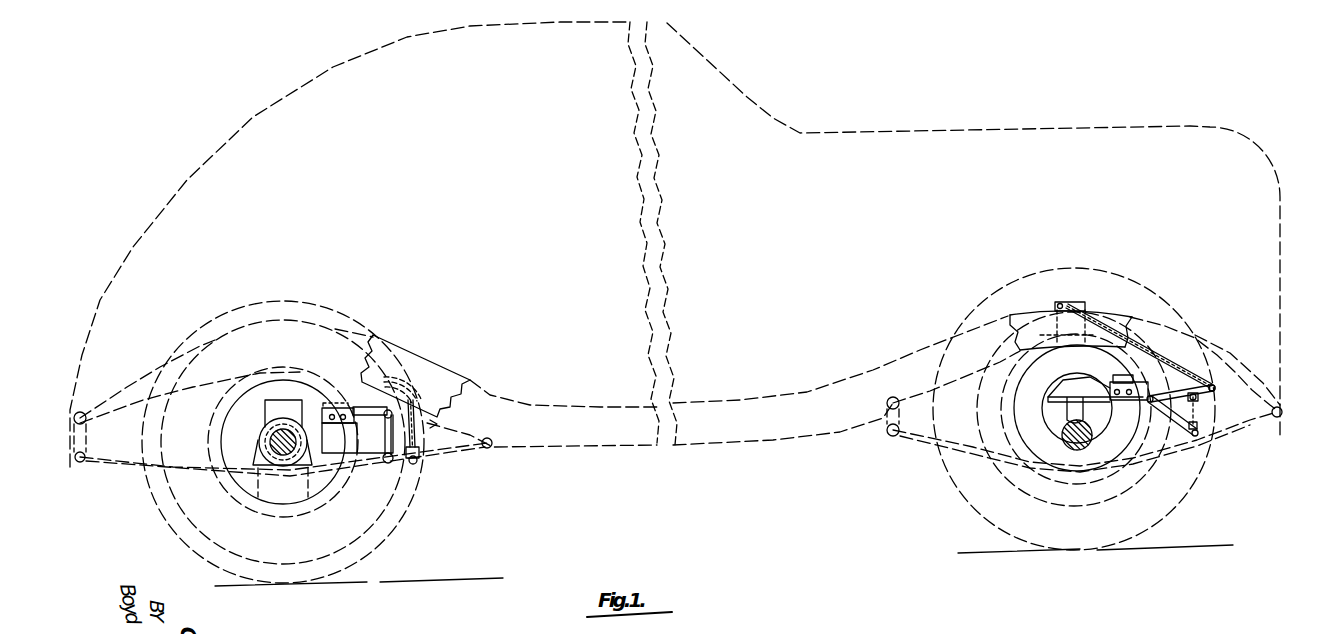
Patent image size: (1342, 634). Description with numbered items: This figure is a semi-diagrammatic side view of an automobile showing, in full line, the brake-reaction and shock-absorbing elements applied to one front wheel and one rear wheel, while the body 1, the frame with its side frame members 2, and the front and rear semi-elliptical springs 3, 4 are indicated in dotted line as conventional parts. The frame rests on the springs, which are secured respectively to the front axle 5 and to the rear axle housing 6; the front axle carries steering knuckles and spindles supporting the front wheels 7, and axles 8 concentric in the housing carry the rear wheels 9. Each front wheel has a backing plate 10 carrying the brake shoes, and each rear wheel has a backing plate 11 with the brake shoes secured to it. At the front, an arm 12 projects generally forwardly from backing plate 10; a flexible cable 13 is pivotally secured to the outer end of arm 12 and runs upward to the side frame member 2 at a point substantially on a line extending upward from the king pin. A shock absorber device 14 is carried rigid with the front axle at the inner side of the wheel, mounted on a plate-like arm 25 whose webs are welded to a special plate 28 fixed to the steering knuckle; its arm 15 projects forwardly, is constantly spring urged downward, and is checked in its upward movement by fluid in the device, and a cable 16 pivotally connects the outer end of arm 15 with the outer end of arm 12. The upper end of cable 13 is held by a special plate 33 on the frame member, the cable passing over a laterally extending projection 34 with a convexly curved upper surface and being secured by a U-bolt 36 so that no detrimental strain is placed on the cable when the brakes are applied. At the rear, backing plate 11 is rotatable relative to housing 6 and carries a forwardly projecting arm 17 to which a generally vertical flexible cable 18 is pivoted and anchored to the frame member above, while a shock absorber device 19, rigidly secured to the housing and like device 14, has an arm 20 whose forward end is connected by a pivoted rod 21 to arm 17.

The body 1 is at (855, 133).
The side frame members 2 is at (437, 365).
The front semi-elliptical spring 3 is at (980, 460).
The rear semi-elliptical spring 4 is at (432, 462).
The front axle 5 is at (1073, 442).
The rear axle housing 6 is at (265, 458).
The front wheels 7 is at (1205, 470).
The rear axles 8 is at (283, 458).
The rear wheels 9 is at (405, 516).
The front backing plate 10 is at (1030, 432).
The rear backing plate 11 is at (237, 455).
The arm 12 is at (1160, 423).
The flexible cable 13 is at (1125, 342).
The shock absorber device 14 is at (1113, 378).
The arm 15 is at (1150, 399).
The cable 16 is at (1197, 412).
The arm 17 is at (362, 458).
The flexible cable 18 is at (425, 375).
The shock absorber device 19 is at (335, 403).
The arm 20 is at (372, 413).
The rod 21 is at (440, 422).
The plate-like arm 25 is at (1110, 384).
The special plate 28 is at (1047, 412).
The special plate 33 is at (1085, 305).
The projection 34 is at (1052, 333).
The U-bolt 36 is at (1062, 303).